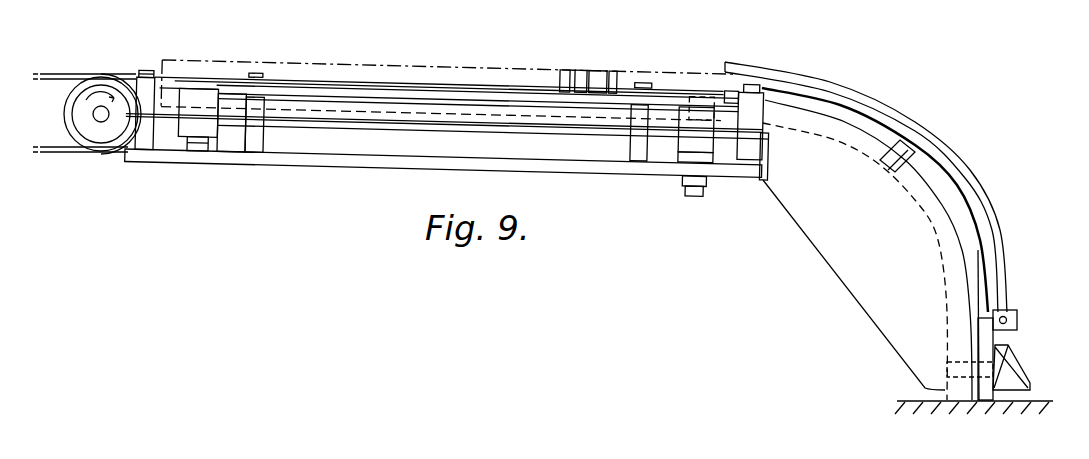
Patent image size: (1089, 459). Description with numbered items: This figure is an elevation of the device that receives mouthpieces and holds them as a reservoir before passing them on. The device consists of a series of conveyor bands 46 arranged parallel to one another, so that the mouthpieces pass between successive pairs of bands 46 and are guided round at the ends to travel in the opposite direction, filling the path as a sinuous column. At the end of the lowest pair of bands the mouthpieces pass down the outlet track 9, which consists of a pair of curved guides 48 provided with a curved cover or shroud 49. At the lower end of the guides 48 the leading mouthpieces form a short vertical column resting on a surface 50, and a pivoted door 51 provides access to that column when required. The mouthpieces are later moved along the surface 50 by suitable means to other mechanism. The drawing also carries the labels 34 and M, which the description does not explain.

The return pulley 34 is at (84, 90).
The conveyor bands 46 is at (473, 92).
The magnet M is at (597, 77).
The outlet track 9 is at (950, 146).
The curved cover or shroud 49 is at (985, 223).
The curved guides 48 is at (877, 302).
The surface 50 is at (917, 400).
The pivoted door 51 is at (1010, 377).